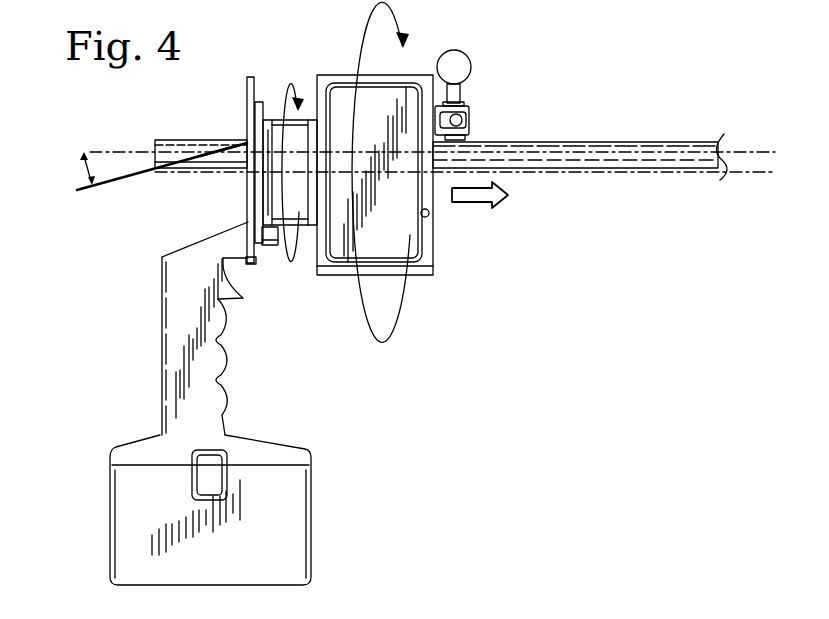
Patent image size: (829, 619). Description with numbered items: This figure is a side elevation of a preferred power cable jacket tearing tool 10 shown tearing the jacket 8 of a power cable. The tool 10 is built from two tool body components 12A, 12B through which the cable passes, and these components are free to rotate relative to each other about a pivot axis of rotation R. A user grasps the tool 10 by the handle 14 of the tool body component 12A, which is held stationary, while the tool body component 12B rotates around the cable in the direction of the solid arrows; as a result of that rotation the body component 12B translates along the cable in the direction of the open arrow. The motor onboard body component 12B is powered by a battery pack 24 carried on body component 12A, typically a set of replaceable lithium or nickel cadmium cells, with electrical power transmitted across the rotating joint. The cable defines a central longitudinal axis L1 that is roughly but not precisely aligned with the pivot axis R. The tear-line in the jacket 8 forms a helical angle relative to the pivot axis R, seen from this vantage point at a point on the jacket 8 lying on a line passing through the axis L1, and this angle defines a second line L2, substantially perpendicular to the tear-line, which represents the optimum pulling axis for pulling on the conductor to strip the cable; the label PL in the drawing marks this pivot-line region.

The jacket 8 is at (155, 147).
The power cable jacket tearing tool 10 is at (421, 325).
The tool body component 12A is at (128, 309).
The tool body component 12B is at (343, 300).
The handle 14 is at (146, 391).
The battery pack 24 is at (311, 510).
The pivot line PL is at (237, 146).
The central longitudinal axis L1 is at (737, 150).
The optimum pulling axis L2 is at (112, 183).
The pivot axis of rotation R is at (765, 175).